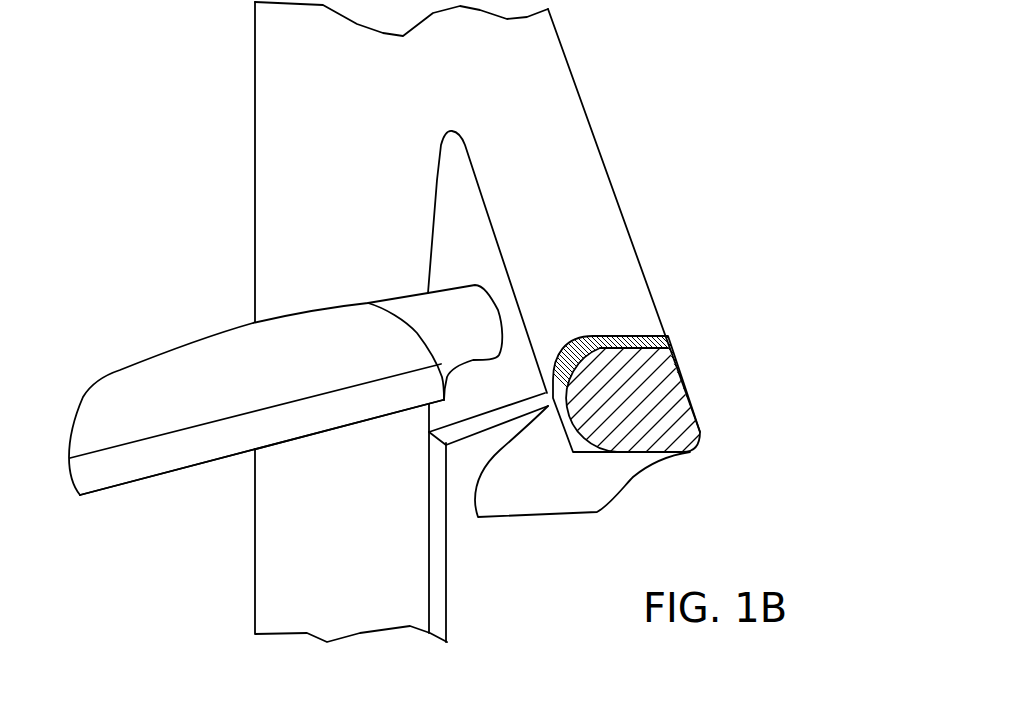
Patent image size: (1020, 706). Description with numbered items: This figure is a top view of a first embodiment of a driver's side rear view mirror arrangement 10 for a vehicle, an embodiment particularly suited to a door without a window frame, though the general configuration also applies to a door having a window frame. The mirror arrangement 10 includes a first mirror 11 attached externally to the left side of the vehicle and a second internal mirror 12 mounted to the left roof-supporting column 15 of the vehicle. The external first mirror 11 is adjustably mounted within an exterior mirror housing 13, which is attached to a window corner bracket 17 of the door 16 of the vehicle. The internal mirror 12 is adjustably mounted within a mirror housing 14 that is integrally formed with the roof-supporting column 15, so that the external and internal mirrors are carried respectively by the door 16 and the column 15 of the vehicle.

The rear view mirror arrangement 10 is at (218, 182).
The first mirror 11 is at (142, 482).
The second internal mirror 12 is at (543, 518).
The exterior mirror housing 13 is at (128, 372).
The mirror housing 14 is at (633, 477).
The roof-supporting column 15 is at (617, 279).
The door 16 is at (287, 572).
The window corner bracket 17 is at (467, 238).